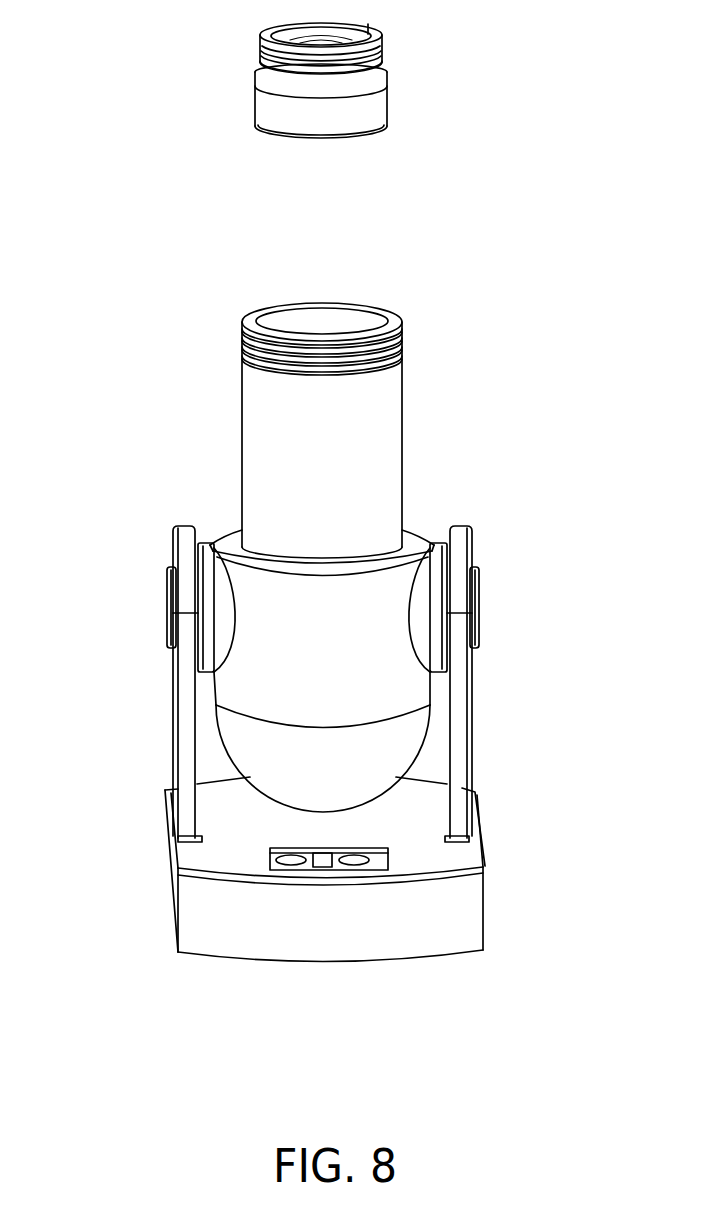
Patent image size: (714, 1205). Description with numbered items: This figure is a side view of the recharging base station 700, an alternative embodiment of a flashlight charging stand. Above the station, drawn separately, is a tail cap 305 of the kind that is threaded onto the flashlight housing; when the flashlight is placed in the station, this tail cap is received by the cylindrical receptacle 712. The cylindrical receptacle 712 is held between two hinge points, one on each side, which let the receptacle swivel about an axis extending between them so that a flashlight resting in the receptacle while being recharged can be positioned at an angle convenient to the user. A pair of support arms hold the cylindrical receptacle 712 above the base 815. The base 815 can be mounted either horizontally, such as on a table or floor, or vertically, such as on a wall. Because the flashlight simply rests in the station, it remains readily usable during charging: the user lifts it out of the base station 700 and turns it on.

The tail cap 305 is at (370, 108).
The recharging base station 700 is at (519, 417).
The cylindrical receptacle 712 is at (385, 383).
The base 815 is at (362, 936).